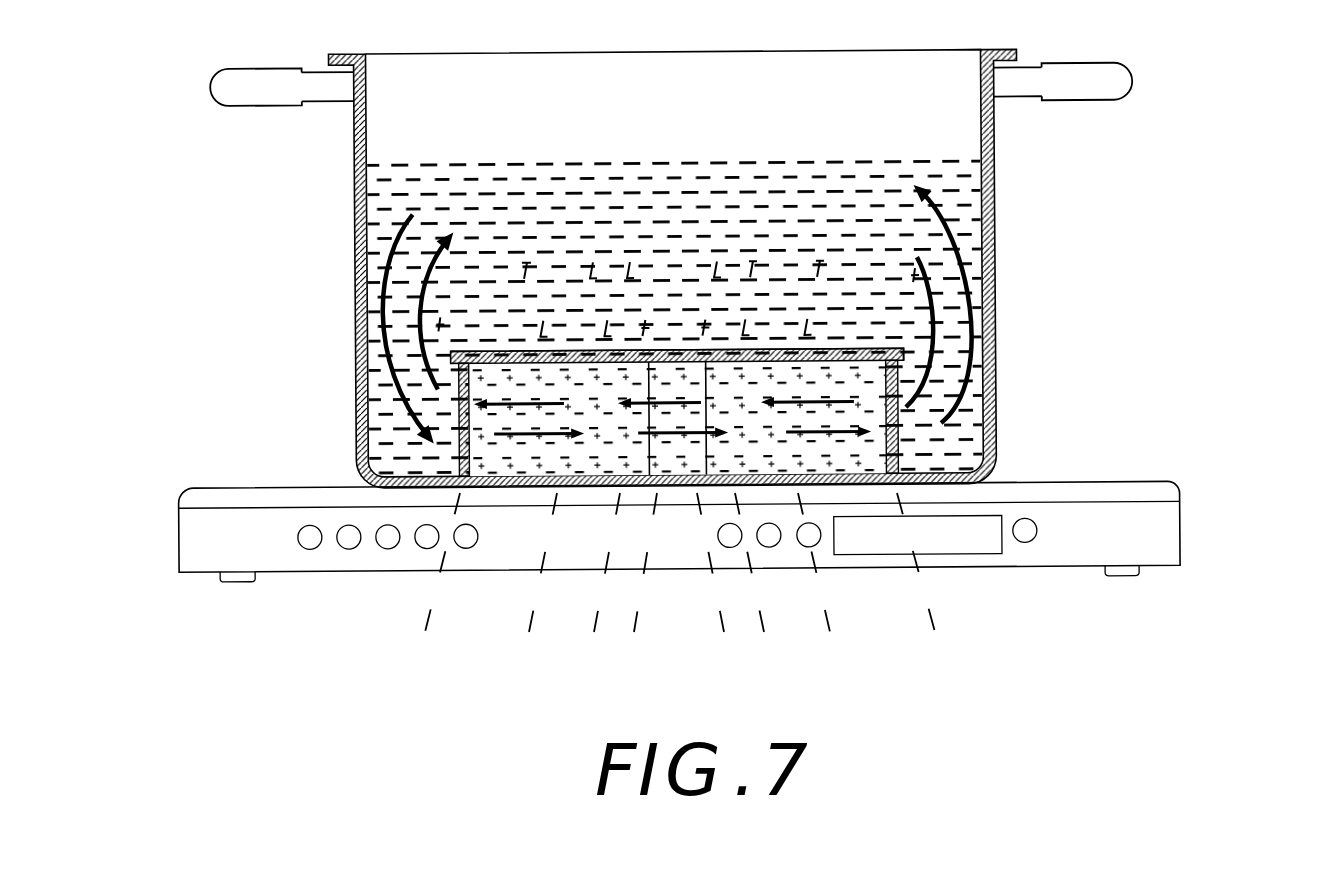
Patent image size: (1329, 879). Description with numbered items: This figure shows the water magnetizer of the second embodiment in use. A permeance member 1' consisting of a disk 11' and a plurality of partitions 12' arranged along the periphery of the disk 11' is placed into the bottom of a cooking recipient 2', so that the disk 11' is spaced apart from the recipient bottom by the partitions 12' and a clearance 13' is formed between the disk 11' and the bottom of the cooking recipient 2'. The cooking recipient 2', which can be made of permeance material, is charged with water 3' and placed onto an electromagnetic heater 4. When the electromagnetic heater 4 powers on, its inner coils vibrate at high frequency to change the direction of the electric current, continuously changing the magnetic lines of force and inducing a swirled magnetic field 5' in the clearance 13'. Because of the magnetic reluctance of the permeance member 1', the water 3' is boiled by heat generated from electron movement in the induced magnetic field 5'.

The permeance member 1' is at (761, 305).
The cooking recipient 2' is at (672, 269).
The water 3' is at (619, 312).
The electromagnetic heater 4 is at (1166, 541).
The swirled magnetic field 5' is at (680, 517).
The disk 11' is at (785, 382).
The partitions 12' is at (1008, 416).
The clearance 13' is at (327, 419).